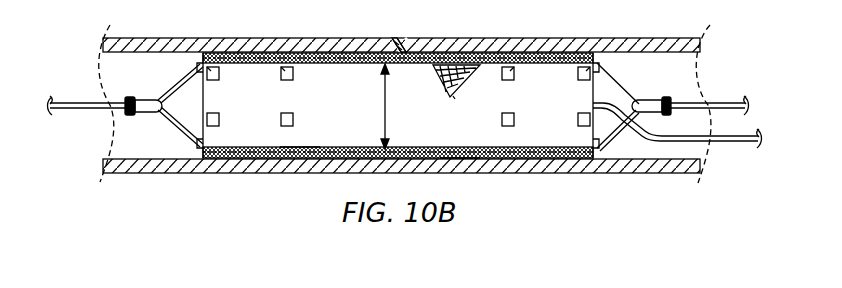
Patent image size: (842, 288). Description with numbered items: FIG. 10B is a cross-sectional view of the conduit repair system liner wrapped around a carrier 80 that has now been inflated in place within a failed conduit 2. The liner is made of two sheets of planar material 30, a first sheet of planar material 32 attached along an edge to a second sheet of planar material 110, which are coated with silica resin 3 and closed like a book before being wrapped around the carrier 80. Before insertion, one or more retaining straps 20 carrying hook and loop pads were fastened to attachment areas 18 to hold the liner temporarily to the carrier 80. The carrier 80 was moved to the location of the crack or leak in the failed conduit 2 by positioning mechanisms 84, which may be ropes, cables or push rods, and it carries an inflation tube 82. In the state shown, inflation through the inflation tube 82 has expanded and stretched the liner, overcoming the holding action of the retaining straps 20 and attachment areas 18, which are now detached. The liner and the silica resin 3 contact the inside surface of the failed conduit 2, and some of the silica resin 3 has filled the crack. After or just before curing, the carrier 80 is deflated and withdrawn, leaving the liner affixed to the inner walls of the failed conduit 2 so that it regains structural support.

The failed conduit 2 is at (335, 40).
The silica resin 3 is at (401, 38).
The attachment areas 18 is at (284, 113).
The retaining straps 20 is at (603, 27).
The sheets of planar material 30 is at (361, 110).
The first sheet of planar material 32 is at (460, 148).
The carrier 80 is at (190, 130).
The inflation tube 82 is at (725, 141).
The positioning mechanisms 84 is at (85, 110).
The second sheet of planar material 110 is at (304, 148).